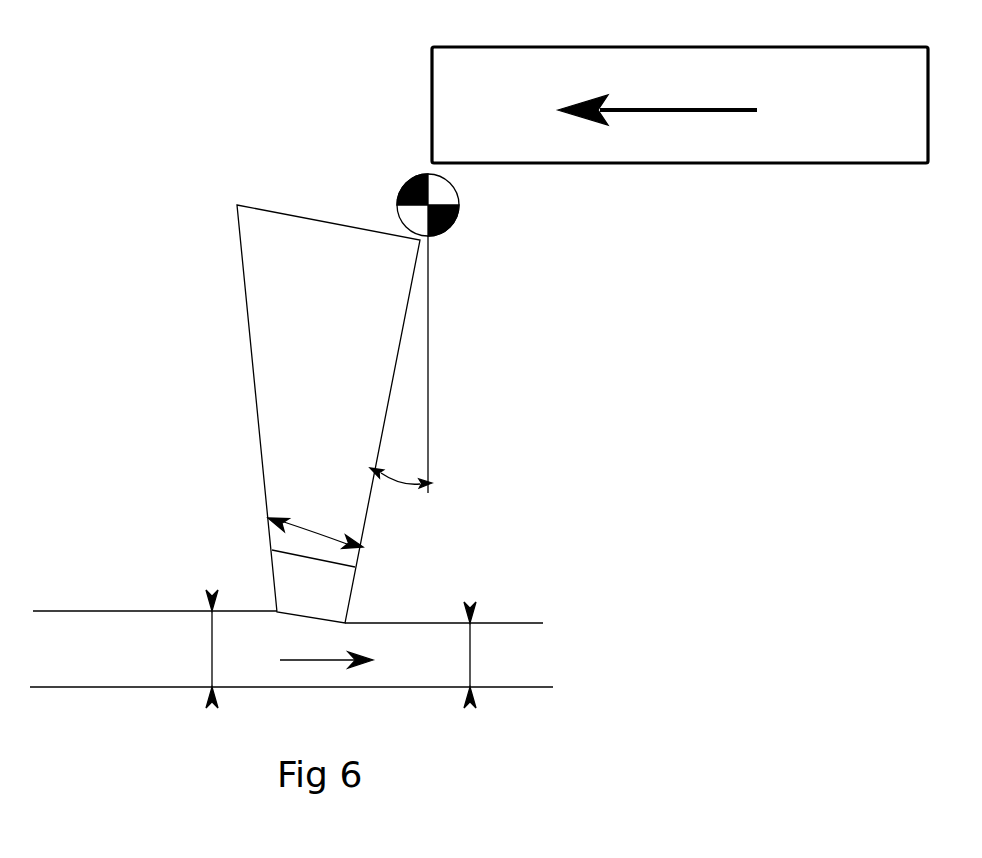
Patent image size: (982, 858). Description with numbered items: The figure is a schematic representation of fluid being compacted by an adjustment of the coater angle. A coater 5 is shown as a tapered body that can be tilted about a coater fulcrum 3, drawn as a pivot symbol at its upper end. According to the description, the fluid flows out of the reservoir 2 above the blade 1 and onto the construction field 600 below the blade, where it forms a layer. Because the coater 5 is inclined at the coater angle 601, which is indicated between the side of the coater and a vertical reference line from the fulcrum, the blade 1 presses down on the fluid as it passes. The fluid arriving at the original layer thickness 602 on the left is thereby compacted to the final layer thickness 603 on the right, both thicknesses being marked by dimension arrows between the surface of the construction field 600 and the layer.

The blade 1 is at (283, 583).
The reservoir 2 is at (285, 443).
The coater fulcrum 3 is at (464, 229).
The coater 5 is at (303, 339).
The construction field 600 is at (96, 701).
The coater angle 601 is at (440, 364).
The layer thickness 602 is at (171, 649).
The final layer thickness 603 is at (502, 655).